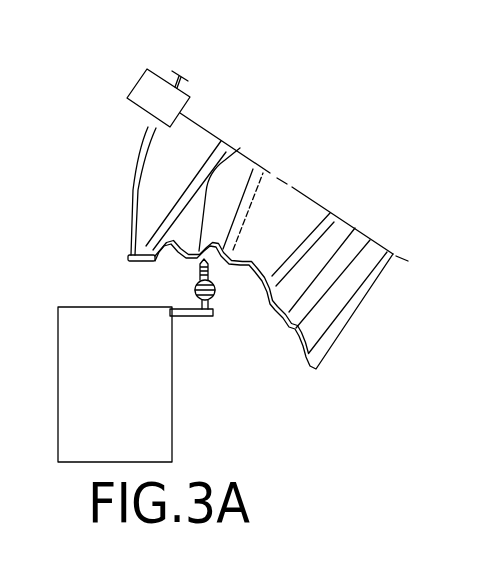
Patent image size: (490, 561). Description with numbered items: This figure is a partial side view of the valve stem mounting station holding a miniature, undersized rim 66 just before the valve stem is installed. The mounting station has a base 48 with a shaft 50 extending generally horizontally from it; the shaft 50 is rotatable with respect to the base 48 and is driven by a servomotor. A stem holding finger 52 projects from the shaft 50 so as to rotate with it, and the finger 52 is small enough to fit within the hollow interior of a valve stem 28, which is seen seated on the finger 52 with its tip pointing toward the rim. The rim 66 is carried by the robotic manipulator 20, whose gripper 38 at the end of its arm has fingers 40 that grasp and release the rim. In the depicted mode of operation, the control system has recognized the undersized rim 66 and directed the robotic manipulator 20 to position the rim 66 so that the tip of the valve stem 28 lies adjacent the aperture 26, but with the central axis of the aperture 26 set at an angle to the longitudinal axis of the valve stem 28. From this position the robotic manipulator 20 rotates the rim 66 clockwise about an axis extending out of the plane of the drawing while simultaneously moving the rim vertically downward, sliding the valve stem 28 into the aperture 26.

The robotic manipulator 20 is at (186, 99).
The aperture 26 is at (240, 148).
The valve stem 28 is at (214, 288).
The gripper 38 is at (136, 120).
The fingers 40 is at (133, 188).
The base 48 is at (110, 380).
The shaft 50 is at (190, 317).
The stem holding finger 52 is at (195, 305).
The undersized rim 66 is at (326, 210).